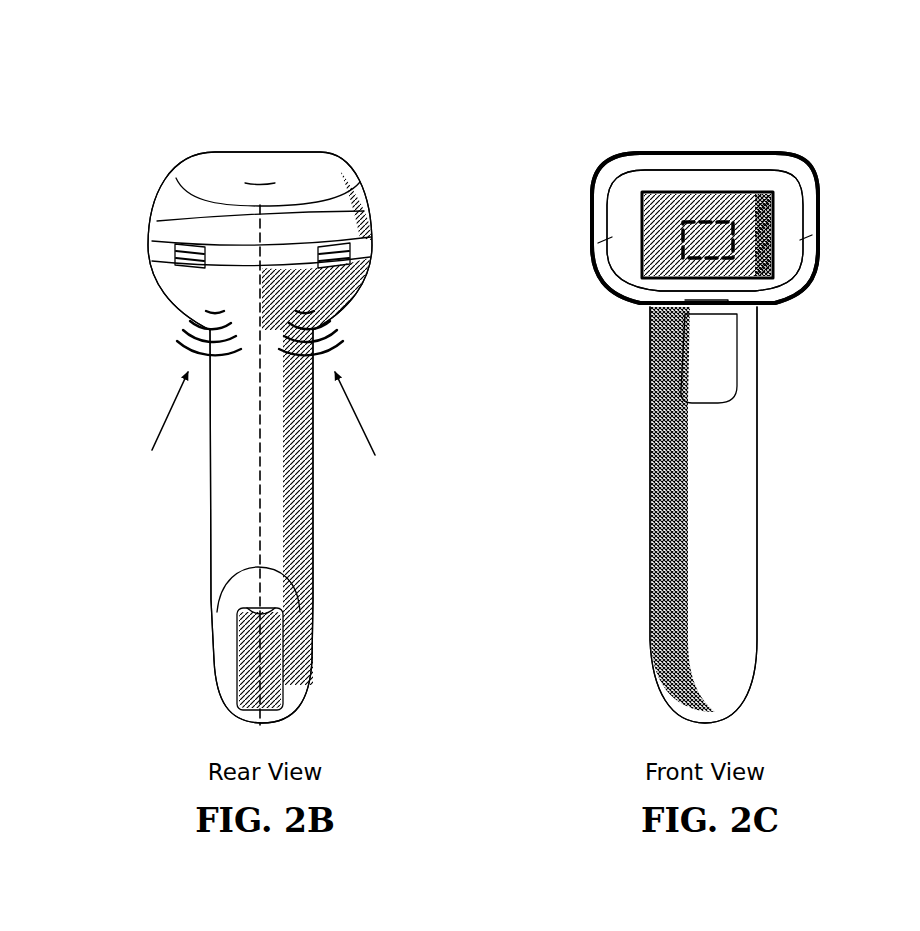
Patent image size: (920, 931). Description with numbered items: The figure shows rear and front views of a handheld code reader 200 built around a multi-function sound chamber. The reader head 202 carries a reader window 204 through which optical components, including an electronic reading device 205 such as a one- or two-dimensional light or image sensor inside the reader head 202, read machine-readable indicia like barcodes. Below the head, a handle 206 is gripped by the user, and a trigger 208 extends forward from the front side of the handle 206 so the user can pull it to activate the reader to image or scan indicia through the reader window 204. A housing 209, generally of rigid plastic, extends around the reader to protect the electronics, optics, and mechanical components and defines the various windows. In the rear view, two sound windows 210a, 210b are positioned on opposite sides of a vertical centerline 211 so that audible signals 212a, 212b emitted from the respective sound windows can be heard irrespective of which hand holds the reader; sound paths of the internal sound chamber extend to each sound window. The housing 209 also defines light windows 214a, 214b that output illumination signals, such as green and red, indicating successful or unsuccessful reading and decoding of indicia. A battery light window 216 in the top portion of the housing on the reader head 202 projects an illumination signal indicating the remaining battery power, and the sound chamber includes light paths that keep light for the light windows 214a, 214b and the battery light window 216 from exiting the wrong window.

In FIG. 2B, the handheld code reader 200 is at (283, 125).
In FIG. 2C, the handheld code reader 200 is at (728, 127).
In FIG. 2B, the reader head 202 is at (360, 187).
In FIG. 2C, the reader head 202 is at (805, 178).
In FIG. 2C, the reader window 204 is at (667, 268).
In FIG. 2C, the electronic reading device 205 is at (678, 230).
In FIG. 2B, the handle 206 is at (312, 533).
In FIG. 2C, the handle 206 is at (758, 492).
In FIG. 2C, the trigger 208 is at (700, 387).
In FIG. 2B, the housing 209 is at (217, 517).
In FIG. 2C, the housing 209 is at (607, 172).
In FIG. 2B, the sound window 210a is at (217, 293).
In FIG. 2B, the sound window 210b is at (315, 297).
In FIG. 2B, the vertical centerline 211 is at (260, 582).
In FIG. 2B, the audible signal 212a is at (146, 460).
In FIG. 2B, the audible signal 212b is at (380, 460).
In FIG. 2B, the light window 214a is at (160, 255).
In FIG. 2B, the light window 214b is at (373, 263).
In FIG. 2B, the battery light window 216 is at (207, 190).